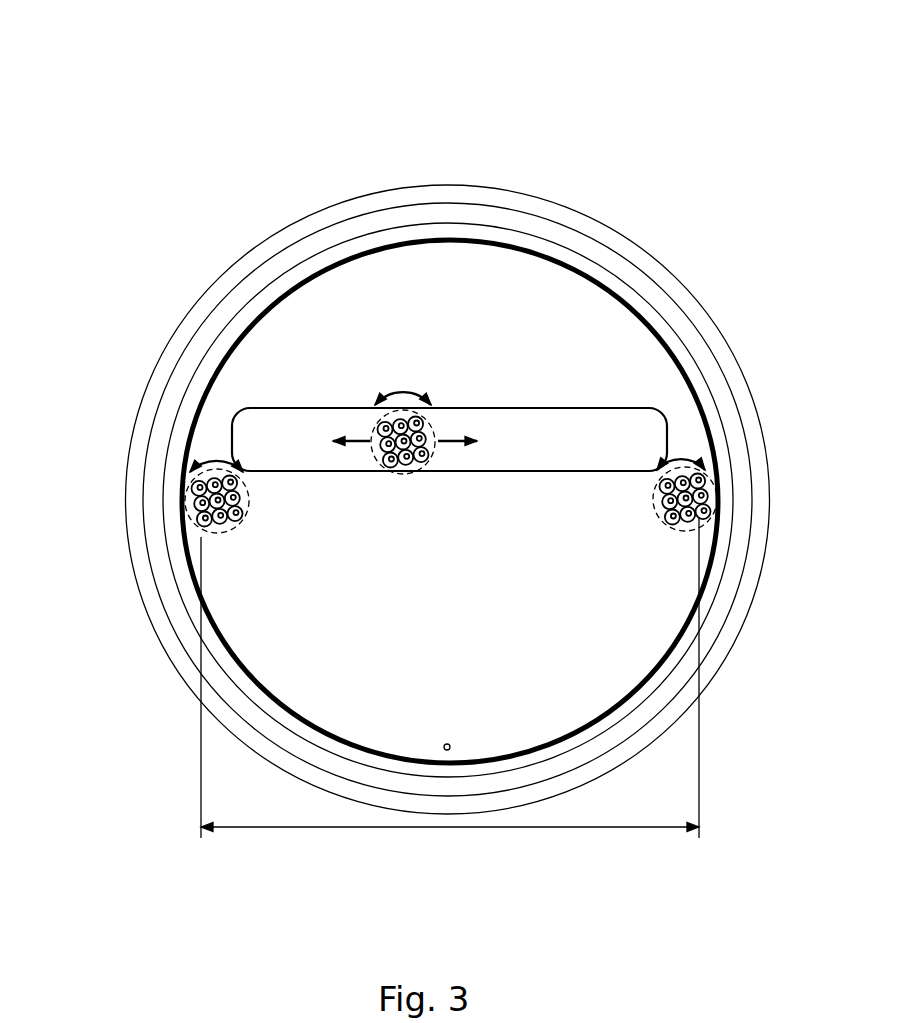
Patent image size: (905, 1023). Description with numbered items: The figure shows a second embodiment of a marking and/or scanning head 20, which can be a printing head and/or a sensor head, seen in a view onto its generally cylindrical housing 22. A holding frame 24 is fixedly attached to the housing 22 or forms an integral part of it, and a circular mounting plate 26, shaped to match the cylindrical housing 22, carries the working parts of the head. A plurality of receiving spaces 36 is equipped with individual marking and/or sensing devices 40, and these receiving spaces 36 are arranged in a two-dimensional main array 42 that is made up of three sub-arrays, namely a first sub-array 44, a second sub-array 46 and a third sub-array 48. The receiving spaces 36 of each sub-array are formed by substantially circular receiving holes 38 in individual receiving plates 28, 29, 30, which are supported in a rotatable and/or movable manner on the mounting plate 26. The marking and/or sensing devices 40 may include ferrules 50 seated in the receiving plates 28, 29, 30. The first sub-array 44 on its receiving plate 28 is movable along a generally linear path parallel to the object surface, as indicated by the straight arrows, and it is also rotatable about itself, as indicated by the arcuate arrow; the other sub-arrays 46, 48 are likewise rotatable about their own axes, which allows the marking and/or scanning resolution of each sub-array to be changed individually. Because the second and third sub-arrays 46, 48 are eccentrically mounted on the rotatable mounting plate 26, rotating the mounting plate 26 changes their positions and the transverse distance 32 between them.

The marking and/or scanning head 20 is at (640, 50).
The housing 22 is at (418, 196).
The holding frame 24 is at (490, 218).
The mounting plate 26 is at (347, 273).
The receiving plate 28 is at (397, 473).
The receiving plate 29 is at (188, 518).
The receiving plate 30 is at (700, 488).
The distance 32 is at (305, 828).
The receiving spaces 36 is at (151, 577).
The receiving holes 38 is at (215, 522).
The marking and/or sensing devices 40 is at (446, 505).
The main array 42 is at (548, 246).
The first sub-array 44 is at (368, 411).
The second sub-array 46 is at (201, 540).
The third sub-array 48 is at (693, 539).
The ferrules 50 is at (403, 412).